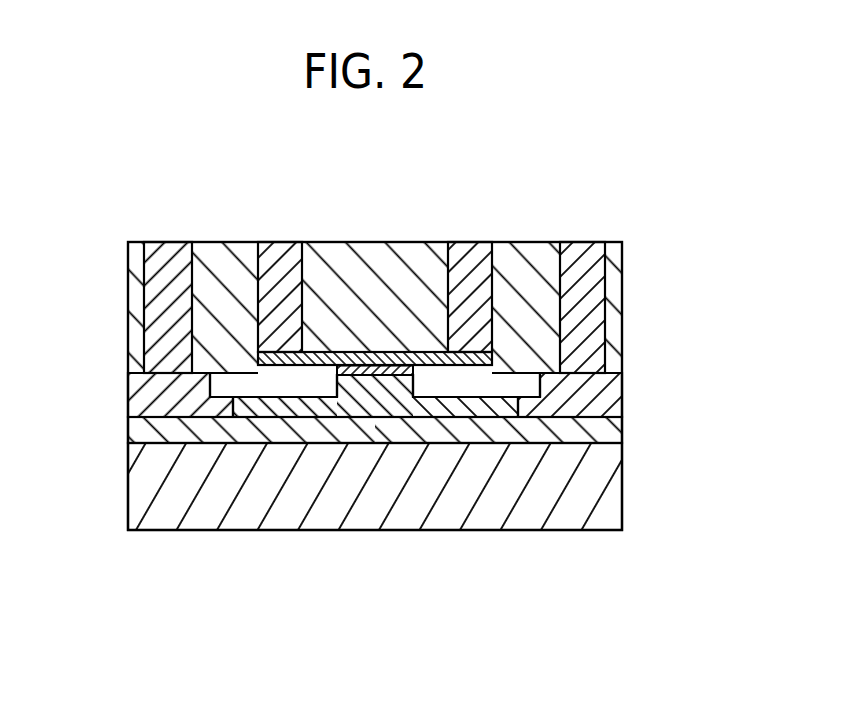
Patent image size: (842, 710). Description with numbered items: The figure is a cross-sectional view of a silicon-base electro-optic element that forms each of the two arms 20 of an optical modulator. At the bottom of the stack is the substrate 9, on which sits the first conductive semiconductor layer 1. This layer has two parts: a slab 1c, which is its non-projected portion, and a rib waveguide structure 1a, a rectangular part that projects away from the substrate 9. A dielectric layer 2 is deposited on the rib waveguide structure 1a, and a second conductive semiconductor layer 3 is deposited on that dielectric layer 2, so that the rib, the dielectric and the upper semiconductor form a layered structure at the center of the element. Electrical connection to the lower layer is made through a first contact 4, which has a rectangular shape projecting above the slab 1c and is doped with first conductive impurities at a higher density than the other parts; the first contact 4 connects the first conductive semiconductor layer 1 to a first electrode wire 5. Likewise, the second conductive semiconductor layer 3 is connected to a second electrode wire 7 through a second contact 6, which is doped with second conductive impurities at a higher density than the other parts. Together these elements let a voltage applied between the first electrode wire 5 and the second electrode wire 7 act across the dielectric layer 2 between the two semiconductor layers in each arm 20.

The arm 20 is at (602, 178).
The substrate 9 is at (596, 488).
The dielectric layer 2 is at (334, 373).
The first contact 4 is at (146, 402).
The first conductive semiconductor layer 1 is at (375, 513).
The slab 1c is at (305, 406).
The rib waveguide structure 1a is at (392, 392).
The second conductive semiconductor layer 3 is at (326, 366).
The second contact 6 is at (259, 363).
The first electrode wire 5 is at (157, 283).
The second electrode wire 7 is at (462, 246).